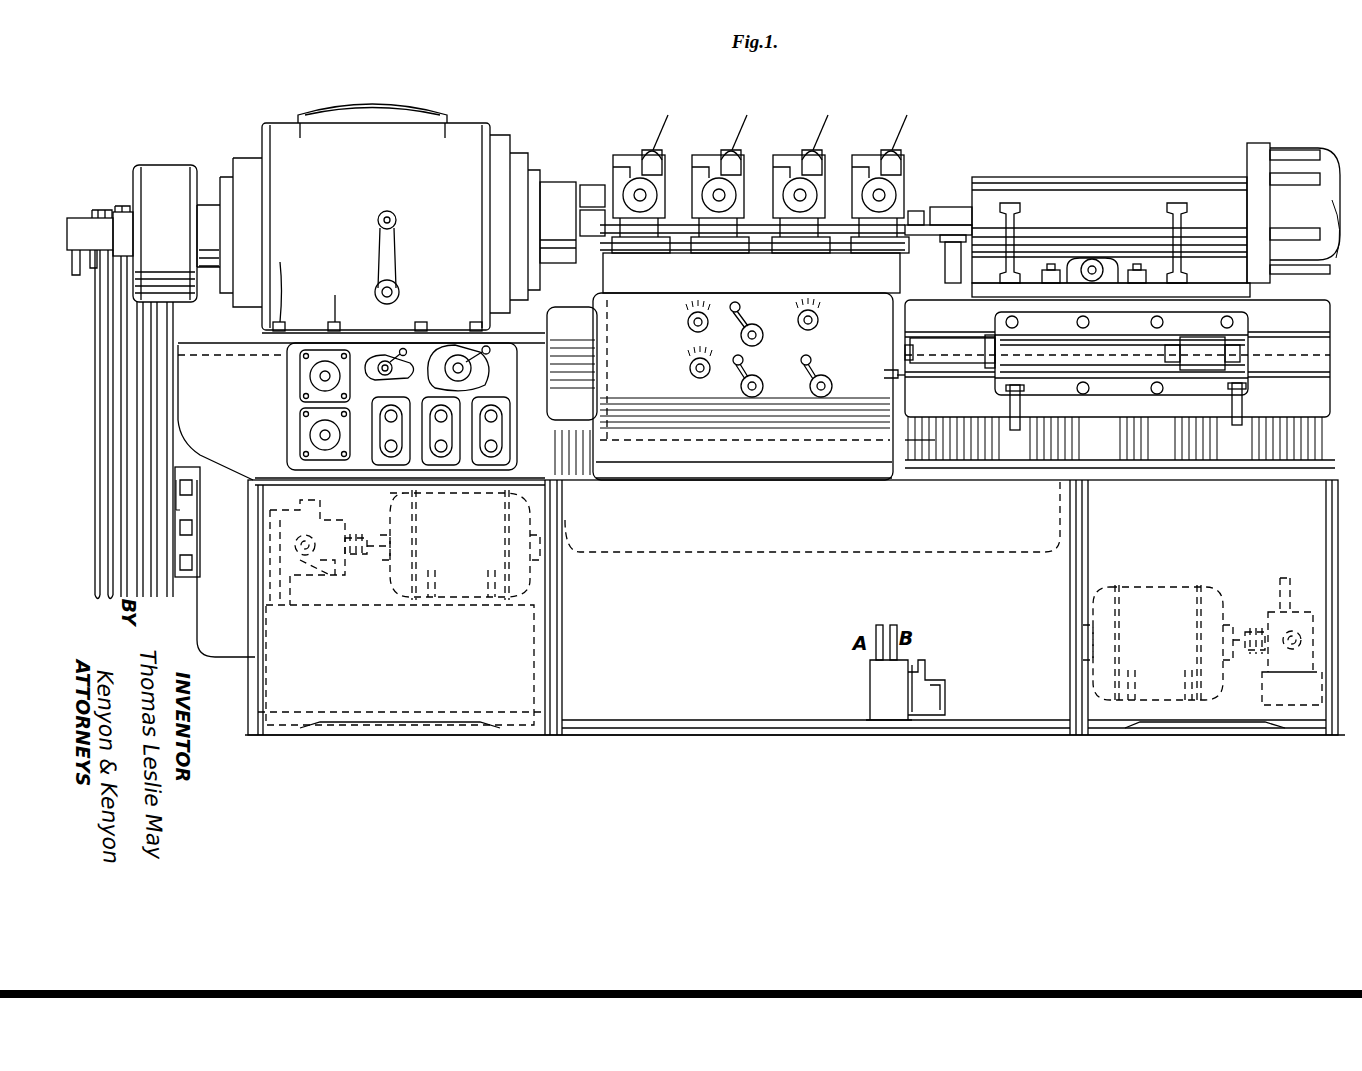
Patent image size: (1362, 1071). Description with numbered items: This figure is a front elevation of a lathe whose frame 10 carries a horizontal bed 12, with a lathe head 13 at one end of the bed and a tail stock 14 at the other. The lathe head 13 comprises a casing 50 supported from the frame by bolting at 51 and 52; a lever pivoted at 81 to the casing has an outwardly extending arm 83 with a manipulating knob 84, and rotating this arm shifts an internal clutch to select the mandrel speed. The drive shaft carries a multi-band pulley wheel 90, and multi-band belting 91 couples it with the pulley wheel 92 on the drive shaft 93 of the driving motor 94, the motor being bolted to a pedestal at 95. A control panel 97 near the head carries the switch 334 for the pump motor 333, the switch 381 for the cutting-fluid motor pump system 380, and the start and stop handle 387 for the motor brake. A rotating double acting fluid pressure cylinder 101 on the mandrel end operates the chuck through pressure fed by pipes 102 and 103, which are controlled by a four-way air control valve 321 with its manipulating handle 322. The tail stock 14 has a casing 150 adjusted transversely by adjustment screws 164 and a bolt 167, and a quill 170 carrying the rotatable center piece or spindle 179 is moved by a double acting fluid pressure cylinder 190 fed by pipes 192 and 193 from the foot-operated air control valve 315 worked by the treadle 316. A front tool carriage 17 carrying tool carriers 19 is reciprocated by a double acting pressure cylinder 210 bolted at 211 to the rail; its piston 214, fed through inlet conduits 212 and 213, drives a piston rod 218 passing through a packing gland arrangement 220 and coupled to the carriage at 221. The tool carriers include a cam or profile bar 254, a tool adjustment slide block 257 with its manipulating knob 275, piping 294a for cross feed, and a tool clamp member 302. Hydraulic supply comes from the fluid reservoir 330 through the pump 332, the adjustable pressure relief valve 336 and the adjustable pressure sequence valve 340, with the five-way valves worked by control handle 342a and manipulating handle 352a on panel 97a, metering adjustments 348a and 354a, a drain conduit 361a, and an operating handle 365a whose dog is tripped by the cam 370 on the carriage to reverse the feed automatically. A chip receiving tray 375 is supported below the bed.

The lathe frame 10 is at (978, 460).
The horizontal bed 12 is at (918, 338).
The lathe head 13 is at (285, 135).
The tail stock 14 is at (1105, 190).
The tool carriage 17 is at (603, 283).
The tool carriers 19 is at (625, 152).
The casing 50 is at (465, 128).
The bolting 51 is at (288, 296).
The bolting 52 is at (334, 300).
The pivot 81 is at (398, 290).
The lever arm 83 is at (392, 260).
The manipulating knob 84 is at (396, 216).
The multi-band pulley wheel 90 is at (102, 438).
The multi-band belting 91 is at (120, 456).
The pulley wheel 92 is at (116, 492).
The drive shaft 93 is at (178, 543).
The driving motor 94 is at (205, 615).
The switch slot 95 is at (388, 430).
The control panel 97 is at (386, 446).
The panel 97a is at (930, 450).
The double acting rotating fluid pressure cylinder 101 is at (160, 180).
The pipe 102 is at (76, 275).
The pipe 103 is at (100, 242).
The casing 150 is at (1043, 190).
The adjustment screw 164 is at (1100, 260).
The bolt 167 is at (1053, 264).
The tail stock quill 170 is at (948, 207).
The tail stock rotatable center piece or spindle 179 is at (917, 211).
The double acting fluid pressure cylinder 190 is at (1312, 165).
The pipe 192 is at (895, 630).
The pipe 193 is at (876, 636).
The double acting pressure cylinder 210 is at (1250, 320).
The bolting 211 is at (1157, 394).
The inlet conduit 212 is at (1245, 405).
The inlet conduit 213 is at (1010, 405).
The piston 214 is at (1203, 370).
The piston rod 218 is at (968, 368).
The packing gland arrangement 220 is at (900, 345).
The coupling 221 is at (917, 365).
The cam or profile bar 254 is at (918, 233).
The tool adjustment slide block 257 is at (622, 195).
The manipulating knob 275 is at (700, 200).
The piping 294a is at (660, 148).
The tool clamp member 302 is at (615, 170).
The foot-operated air control valve 315 is at (885, 668).
The foot treadle 316 is at (940, 680).
The air control valve 321 is at (448, 350).
The manipulating handle 322 is at (548, 318).
The fluid reservoir 330 is at (560, 660).
The pump 332 is at (290, 530).
The pump motor 333 is at (520, 580).
The switch 334 is at (441, 465).
The adjustable pressure relief valve 336 is at (320, 448).
The adjustable pressure sequence valve 340 is at (310, 380).
The control handle 342a is at (735, 372).
The metering adjustment 348a is at (690, 368).
The manipulating handle 352a is at (765, 320).
The knob 354a is at (705, 312).
The conduit 361a is at (815, 312).
The operating handle 365a is at (806, 368).
The cam 370 is at (890, 378).
The chip receiving tray 375 is at (740, 548).
The motor pump system 380 is at (1175, 608).
The switch 381 is at (493, 465).
The start and stop handle 387 is at (385, 355).